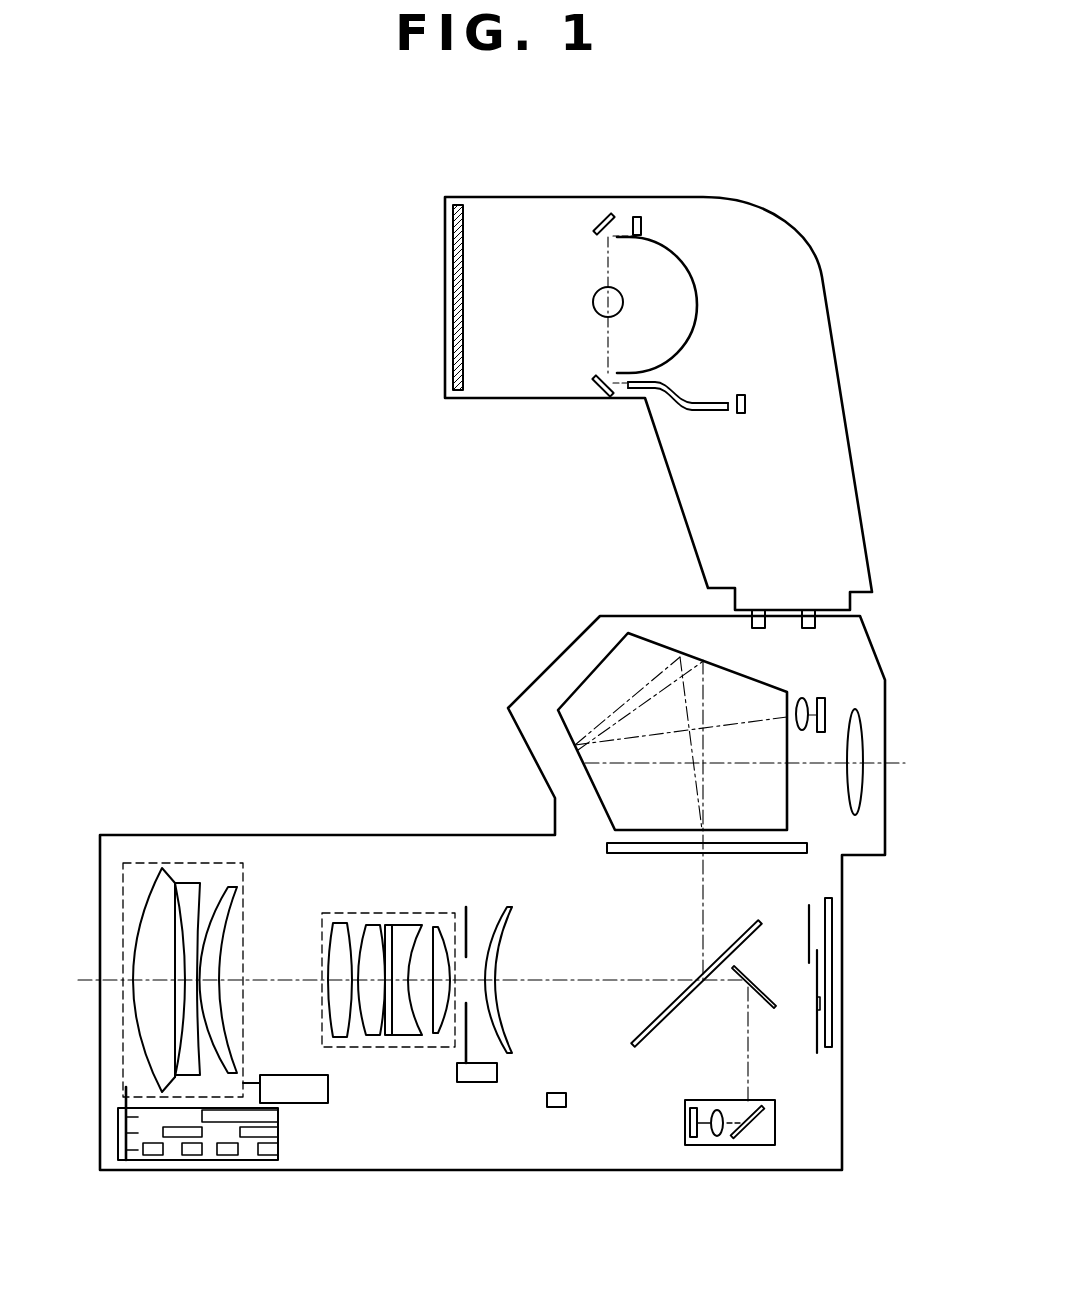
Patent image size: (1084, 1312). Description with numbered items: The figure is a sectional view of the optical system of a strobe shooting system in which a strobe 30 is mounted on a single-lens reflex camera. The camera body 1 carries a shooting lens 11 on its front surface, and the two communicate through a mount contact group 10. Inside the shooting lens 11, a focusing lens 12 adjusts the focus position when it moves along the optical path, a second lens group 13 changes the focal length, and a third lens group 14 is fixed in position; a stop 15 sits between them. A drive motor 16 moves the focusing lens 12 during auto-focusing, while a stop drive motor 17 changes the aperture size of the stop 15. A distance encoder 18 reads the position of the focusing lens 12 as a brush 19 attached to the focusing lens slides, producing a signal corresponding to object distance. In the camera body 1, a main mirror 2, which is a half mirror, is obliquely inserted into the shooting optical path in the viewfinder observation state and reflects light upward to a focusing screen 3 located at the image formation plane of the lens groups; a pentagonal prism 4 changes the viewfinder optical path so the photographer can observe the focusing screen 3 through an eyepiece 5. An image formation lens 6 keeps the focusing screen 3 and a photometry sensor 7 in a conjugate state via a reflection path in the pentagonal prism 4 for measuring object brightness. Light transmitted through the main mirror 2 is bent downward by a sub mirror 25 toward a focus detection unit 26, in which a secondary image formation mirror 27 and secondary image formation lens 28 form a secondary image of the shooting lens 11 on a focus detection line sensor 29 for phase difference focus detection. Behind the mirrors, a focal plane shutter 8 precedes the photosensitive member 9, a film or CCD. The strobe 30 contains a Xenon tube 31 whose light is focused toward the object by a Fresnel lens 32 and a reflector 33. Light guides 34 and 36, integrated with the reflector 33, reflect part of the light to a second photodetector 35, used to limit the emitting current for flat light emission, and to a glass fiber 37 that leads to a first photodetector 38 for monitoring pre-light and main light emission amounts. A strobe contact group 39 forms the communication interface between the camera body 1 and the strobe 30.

The camera body 1 is at (532, 695).
The main mirror 2 is at (758, 922).
The focusing screen 3 is at (808, 848).
The pentagonal prism 4 is at (612, 670).
The eyepiece 5 is at (862, 735).
The image formation lens 6 is at (805, 698).
The photometry sensor 7 is at (822, 700).
The focal plane shutter 8 is at (818, 1053).
The photosensitive member 9 is at (832, 1027).
The mount contact group 10 is at (560, 1107).
The shooting lens 11 is at (130, 835).
The focusing lens 12 is at (208, 863).
The second lens group 13 is at (383, 913).
The third lens group 14 is at (505, 907).
The stop 15 is at (466, 907).
The drive motor 16 is at (305, 1103).
The stop drive motor 17 is at (478, 1082).
The distance encoder 18 is at (172, 1162).
The brush 19 is at (125, 1102).
The sub mirror 25 is at (773, 1006).
The focus detection unit 26 is at (775, 1145).
The secondary image formation mirror 27 is at (757, 1145).
The secondary image formation lens 28 is at (715, 1145).
The focus detection line sensor 29 is at (693, 1145).
The strobe 30 is at (822, 277).
The Xenon tube 31 is at (597, 306).
The Fresnel lens 32 is at (458, 398).
The reflector 33 is at (688, 268).
The light guide 34 is at (598, 222).
The second photodetector 35 is at (637, 217).
The light guide 36 is at (605, 396).
The glass fiber 37 is at (688, 384).
The first photodetector 38 is at (747, 405).
The strobe contact group 39 is at (760, 610).